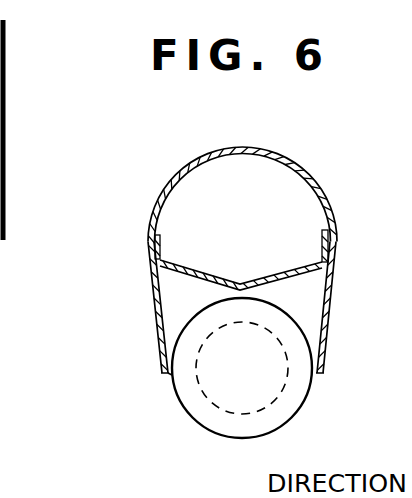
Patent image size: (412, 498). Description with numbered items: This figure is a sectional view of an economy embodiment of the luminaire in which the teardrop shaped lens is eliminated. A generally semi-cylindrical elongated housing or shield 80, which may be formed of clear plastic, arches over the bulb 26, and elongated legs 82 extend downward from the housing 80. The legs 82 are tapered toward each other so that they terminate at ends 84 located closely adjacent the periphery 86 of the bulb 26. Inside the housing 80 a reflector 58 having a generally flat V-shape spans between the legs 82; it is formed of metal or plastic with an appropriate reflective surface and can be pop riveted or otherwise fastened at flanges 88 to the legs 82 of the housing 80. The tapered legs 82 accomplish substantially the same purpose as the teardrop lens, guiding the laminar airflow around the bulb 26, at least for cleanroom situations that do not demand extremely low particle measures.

The housing or shield 80 is at (288, 163).
The legs 82 is at (150, 297).
The ends 84 is at (163, 373).
The periphery 86 is at (183, 406).
The flanges 88 is at (162, 250).
The reflector 58 is at (258, 273).
The bulb 26 is at (292, 401).